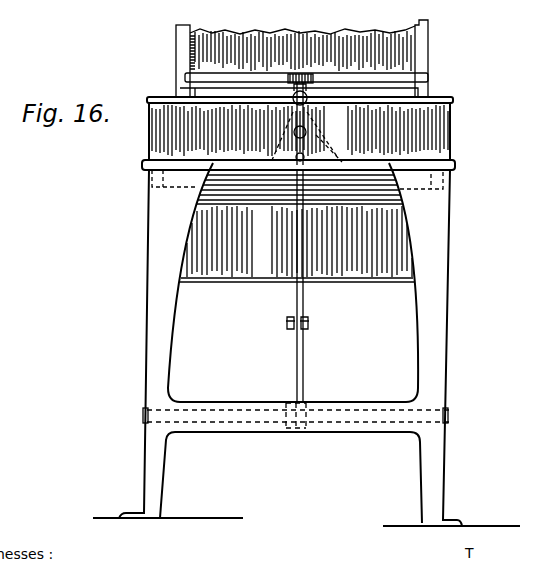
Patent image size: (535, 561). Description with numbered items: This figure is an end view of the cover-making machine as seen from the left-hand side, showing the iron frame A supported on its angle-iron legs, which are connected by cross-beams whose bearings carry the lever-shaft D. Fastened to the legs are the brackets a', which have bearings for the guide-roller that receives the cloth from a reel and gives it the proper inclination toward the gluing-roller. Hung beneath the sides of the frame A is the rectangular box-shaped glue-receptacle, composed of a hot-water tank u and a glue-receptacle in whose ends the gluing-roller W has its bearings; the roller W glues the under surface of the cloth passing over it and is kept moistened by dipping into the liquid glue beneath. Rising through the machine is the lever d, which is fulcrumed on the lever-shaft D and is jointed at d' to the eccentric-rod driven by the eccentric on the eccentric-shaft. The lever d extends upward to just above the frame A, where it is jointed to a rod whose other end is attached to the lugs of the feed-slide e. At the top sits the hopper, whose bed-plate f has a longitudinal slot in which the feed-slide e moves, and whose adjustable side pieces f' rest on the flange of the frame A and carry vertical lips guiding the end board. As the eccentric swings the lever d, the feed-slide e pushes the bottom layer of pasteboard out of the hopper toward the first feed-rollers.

The adjustable side pieces f' is at (297, 58).
The bed-plate f is at (317, 85).
The feed-slide e is at (291, 85).
The iron frame A is at (307, 123).
The brackets a' is at (297, 192).
The gluing-roller W is at (395, 192).
The hot-water tank u is at (297, 243).
The lever d is at (308, 286).
The joint of eccentric-rod and lever d' is at (311, 322).
The lever-shaft D is at (330, 420).